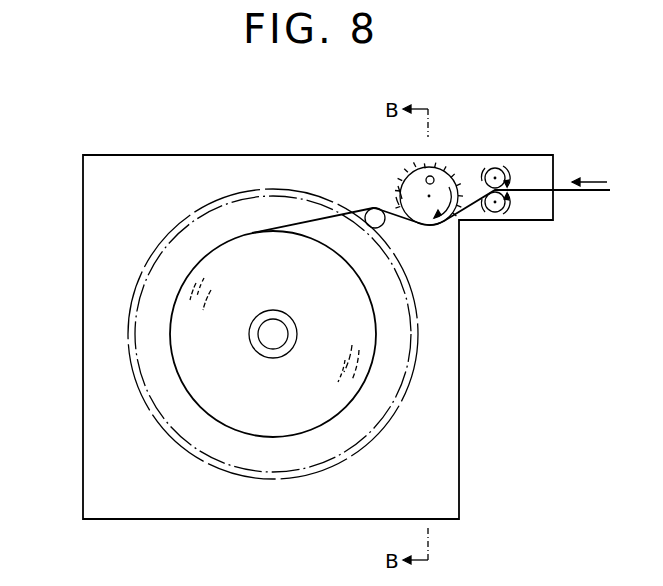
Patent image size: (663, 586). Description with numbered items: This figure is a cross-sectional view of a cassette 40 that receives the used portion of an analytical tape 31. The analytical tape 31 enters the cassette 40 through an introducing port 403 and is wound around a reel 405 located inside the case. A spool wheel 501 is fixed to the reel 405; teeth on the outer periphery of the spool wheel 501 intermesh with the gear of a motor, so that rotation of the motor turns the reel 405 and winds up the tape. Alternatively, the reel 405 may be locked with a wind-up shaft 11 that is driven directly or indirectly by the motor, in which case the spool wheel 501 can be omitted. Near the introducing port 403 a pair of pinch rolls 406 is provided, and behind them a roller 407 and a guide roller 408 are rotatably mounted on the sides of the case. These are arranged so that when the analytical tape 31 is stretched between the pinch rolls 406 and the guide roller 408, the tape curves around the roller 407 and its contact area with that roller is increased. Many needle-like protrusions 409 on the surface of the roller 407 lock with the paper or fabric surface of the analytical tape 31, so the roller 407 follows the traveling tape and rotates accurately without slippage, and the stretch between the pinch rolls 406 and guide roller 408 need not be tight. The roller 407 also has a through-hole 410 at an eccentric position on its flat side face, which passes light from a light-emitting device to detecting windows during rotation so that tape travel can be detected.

The wind-up shaft 11 is at (260, 337).
The analytical tape 31 is at (586, 192).
The cassette 40 is at (493, 111).
The introducing port 403 is at (554, 172).
The reel 405 is at (250, 326).
The pinch rolls 406 is at (499, 168).
The roller 407 is at (398, 198).
The guide roller 408 is at (385, 226).
The needle-like protrusions 409 is at (400, 184).
The through-hole 410 is at (434, 178).
The spool wheel 501 is at (135, 289).